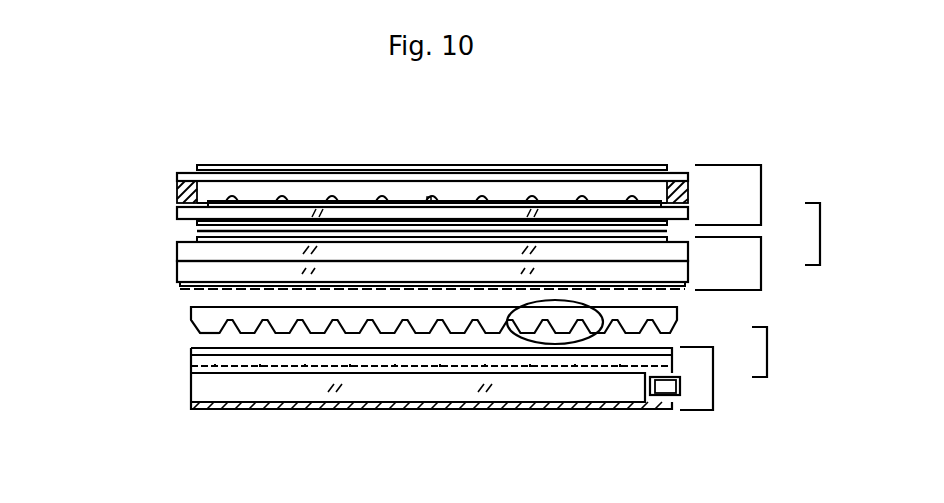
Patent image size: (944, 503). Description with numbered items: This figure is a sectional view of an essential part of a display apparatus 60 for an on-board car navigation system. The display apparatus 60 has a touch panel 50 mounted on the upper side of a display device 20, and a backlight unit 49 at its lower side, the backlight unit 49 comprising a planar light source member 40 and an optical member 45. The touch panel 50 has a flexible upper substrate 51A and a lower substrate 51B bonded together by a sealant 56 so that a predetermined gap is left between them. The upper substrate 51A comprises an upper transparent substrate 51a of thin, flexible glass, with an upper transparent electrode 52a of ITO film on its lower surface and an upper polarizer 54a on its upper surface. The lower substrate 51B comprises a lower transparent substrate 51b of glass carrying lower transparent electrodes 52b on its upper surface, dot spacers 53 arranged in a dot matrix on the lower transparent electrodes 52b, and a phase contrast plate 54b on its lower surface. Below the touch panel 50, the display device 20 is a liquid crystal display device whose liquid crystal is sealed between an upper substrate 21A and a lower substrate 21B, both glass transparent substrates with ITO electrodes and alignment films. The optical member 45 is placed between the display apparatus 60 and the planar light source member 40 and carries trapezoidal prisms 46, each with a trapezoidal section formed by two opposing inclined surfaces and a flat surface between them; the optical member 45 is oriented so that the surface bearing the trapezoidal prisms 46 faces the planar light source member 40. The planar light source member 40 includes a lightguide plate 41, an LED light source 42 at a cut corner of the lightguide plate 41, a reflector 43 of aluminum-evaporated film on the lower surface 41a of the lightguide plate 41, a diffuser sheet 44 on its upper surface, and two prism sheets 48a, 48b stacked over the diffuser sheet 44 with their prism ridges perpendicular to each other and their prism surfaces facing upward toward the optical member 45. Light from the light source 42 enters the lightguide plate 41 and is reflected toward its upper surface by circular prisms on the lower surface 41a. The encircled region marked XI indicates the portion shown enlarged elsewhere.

The display device 20 is at (491, 263).
The upper substrate 21A is at (176, 251).
The lower substrate 21B is at (176, 272).
The planar light source member 40 is at (472, 378).
The lightguide plate 41 is at (247, 387).
The lower surface of the lightguide plate 41a is at (310, 410).
The light source 42 is at (660, 395).
The reflector 43 is at (357, 404).
The diffuser sheet 44 is at (405, 373).
The optical member 45 is at (681, 327).
The trapezoidal prisms 46 is at (244, 333).
The prism sheet 48a is at (458, 356).
The prism sheet 48b is at (512, 349).
The backlight unit 49 is at (782, 352).
The touch panel 50 is at (748, 195).
The upper substrate 51A is at (176, 177).
The lower substrate 51B is at (176, 214).
The upper transparent substrate 51a is at (243, 176).
The lower transparent substrate 51b is at (497, 214).
The upper transparent electrode 52a is at (303, 195).
The lower transparent electrodes 52b is at (560, 204).
The dot spacers 53 is at (429, 198).
The upper polarizer 54a is at (370, 198).
The phase contrast plate 54b is at (624, 224).
The sealant 56 is at (177, 192).
The display apparatus 60 is at (833, 234).
The section XI detail region XI is at (552, 340).